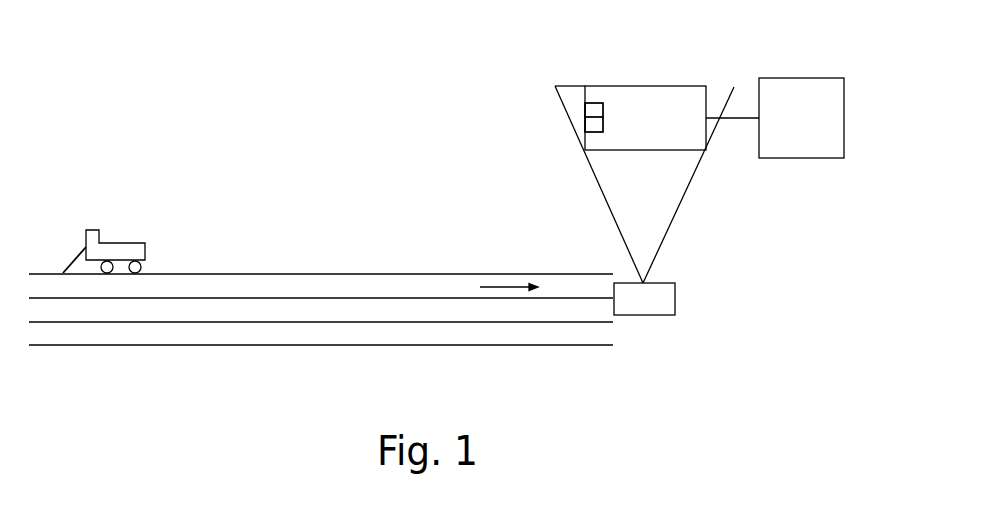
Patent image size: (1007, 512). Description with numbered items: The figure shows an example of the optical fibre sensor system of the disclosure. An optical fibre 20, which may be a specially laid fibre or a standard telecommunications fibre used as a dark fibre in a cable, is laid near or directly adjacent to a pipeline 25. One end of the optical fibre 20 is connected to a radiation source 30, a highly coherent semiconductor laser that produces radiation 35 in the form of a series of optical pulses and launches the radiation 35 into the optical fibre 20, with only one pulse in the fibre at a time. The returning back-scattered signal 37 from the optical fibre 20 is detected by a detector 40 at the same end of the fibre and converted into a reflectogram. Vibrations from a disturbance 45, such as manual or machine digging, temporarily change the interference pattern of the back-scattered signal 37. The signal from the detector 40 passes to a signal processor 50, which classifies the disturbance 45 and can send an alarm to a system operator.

The optical fibre 20 is at (292, 297).
The pipeline 25 is at (321, 335).
The radiation source 30 is at (593, 112).
The radiation 35 is at (603, 113).
The back-scattered signal 37 is at (524, 289).
The detector 40 is at (592, 124).
The disturbance 45 is at (69, 250).
The signal processor 50 is at (801, 118).